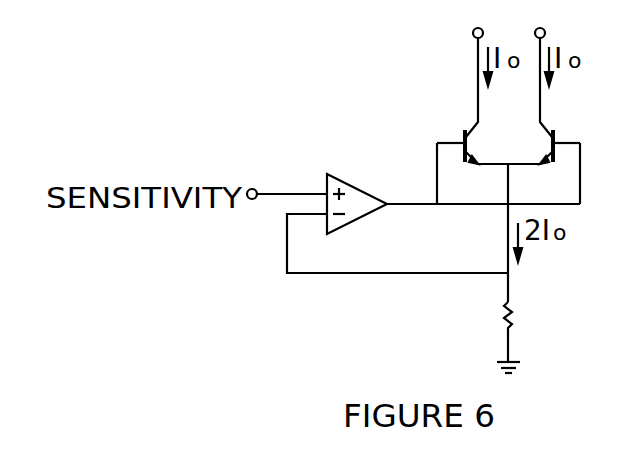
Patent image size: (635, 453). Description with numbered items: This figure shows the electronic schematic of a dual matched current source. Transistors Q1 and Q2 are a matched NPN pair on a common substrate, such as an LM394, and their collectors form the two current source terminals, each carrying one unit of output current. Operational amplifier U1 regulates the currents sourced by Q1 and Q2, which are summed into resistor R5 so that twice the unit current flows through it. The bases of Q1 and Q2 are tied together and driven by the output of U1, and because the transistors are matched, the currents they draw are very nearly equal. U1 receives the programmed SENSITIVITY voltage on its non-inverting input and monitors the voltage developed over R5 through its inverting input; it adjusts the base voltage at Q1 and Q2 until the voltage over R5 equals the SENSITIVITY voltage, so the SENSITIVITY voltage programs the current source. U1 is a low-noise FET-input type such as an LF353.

The operational amplifier U1 is at (357, 194).
The transistor Q1 is at (453, 96).
The transistor Q2 is at (565, 96).
The resistor R5 is at (530, 330).